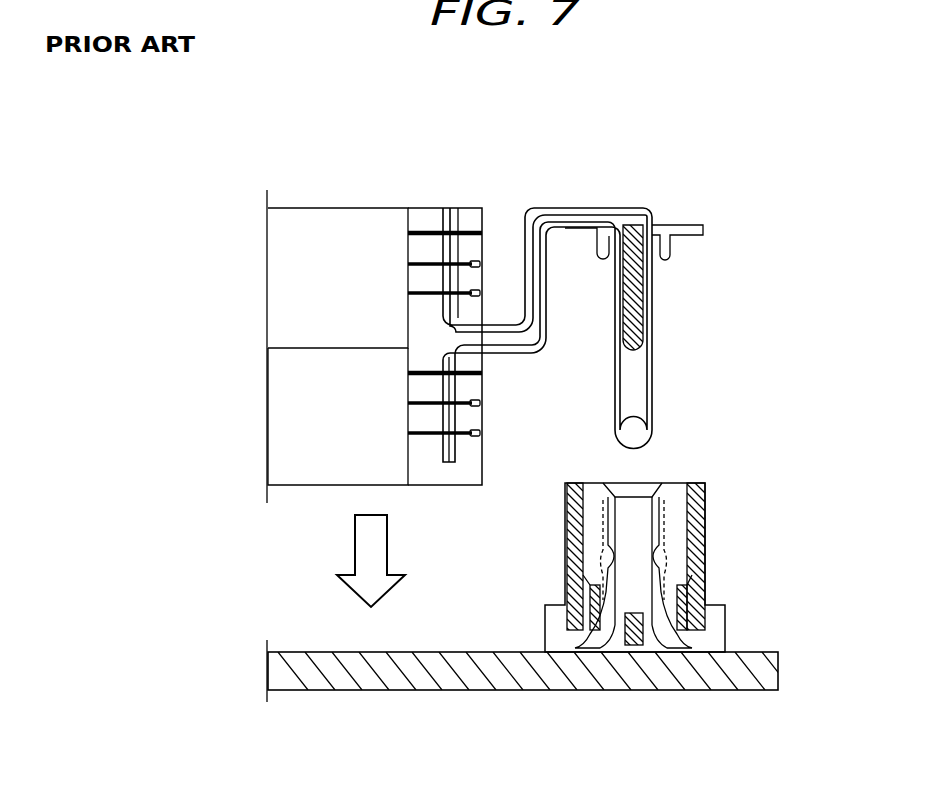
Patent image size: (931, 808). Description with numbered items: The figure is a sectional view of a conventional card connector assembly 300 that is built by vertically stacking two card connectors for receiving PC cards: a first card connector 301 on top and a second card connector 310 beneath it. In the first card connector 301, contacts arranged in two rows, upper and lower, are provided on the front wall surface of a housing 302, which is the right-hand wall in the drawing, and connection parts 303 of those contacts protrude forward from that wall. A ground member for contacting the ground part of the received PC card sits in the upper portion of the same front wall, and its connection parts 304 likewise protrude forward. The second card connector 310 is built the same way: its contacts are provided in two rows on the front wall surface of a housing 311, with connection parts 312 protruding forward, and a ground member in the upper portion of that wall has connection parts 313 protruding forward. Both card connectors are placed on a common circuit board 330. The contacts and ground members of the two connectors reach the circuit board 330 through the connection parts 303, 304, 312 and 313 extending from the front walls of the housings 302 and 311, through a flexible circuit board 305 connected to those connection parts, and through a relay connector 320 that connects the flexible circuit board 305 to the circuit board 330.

The card connector assembly 300 is at (515, 168).
The first card connector 301 is at (335, 207).
The housing 302 is at (292, 253).
The connection parts of the contacts 303 is at (416, 265).
The connection parts of the ground member 304 is at (435, 230).
The flexible circuit board (FPC) 305 is at (655, 388).
The second card connector 310 is at (316, 505).
The housing 311 is at (295, 410).
The connection parts of the contacts 312 is at (415, 403).
The connection parts of the ground member 313 is at (410, 373).
The relay connector 320 is at (707, 491).
The circuit board 330 is at (565, 690).